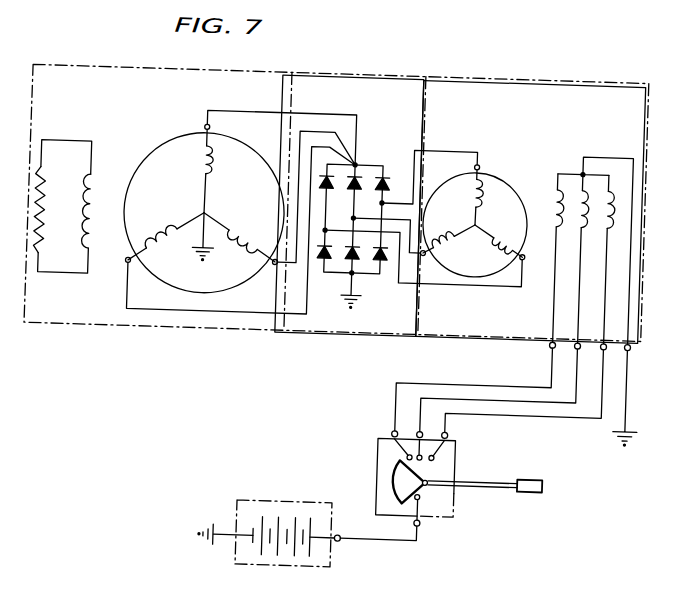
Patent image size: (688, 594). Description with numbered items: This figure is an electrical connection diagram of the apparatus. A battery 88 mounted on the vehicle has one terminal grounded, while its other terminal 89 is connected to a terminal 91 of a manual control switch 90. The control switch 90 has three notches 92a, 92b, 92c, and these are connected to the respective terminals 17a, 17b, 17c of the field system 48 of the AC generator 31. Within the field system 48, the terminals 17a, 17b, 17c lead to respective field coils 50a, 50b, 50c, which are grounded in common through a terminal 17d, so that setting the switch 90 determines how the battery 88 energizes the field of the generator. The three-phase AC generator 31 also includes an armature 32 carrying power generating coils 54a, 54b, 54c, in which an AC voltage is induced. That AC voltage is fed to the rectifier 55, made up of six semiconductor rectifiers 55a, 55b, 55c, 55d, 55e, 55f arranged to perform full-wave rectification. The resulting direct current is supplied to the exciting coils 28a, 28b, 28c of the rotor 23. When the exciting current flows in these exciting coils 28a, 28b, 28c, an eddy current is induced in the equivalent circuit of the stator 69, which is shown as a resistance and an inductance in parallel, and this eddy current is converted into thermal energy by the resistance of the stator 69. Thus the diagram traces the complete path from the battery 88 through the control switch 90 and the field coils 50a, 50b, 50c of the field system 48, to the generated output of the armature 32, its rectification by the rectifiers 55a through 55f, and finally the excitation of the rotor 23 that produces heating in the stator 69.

The stator 69 is at (63, 149).
The rotor 23 is at (170, 136).
The exciting coil 28a is at (212, 164).
The exciting coil 28b is at (235, 238).
The exciting coil 28c is at (161, 234).
The semiconductor rectifiers 55 is at (385, 186).
The semiconductor rectifier 55a is at (385, 176).
The semiconductor rectifier 55b is at (356, 176).
The semiconductor rectifier 55c is at (325, 176).
The semiconductor rectifier 55d is at (390, 259).
The semiconductor rectifier 55e is at (358, 259).
The semiconductor rectifier 55f is at (325, 259).
The armature 32 is at (489, 168).
The power generating coil 54a is at (489, 188).
The power generating coil 54b is at (444, 233).
The power generating coil 54c is at (502, 236).
The AC generator 31 is at (573, 60).
The field system 48 is at (581, 198).
The field coil 50a is at (552, 180).
The field coil 50b is at (580, 180).
The field coil 50c is at (611, 170).
The terminal 17a is at (554, 342).
The terminal 17b is at (578, 337).
The terminal 17c is at (610, 343).
The terminal 17d is at (635, 342).
The manual control switch 90 is at (435, 480).
The notch 92a is at (410, 448).
The notch 92b is at (410, 475).
The notch 92c is at (443, 452).
The terminal 91 is at (430, 523).
The terminal 89 is at (349, 541).
The battery 88 is at (306, 503).